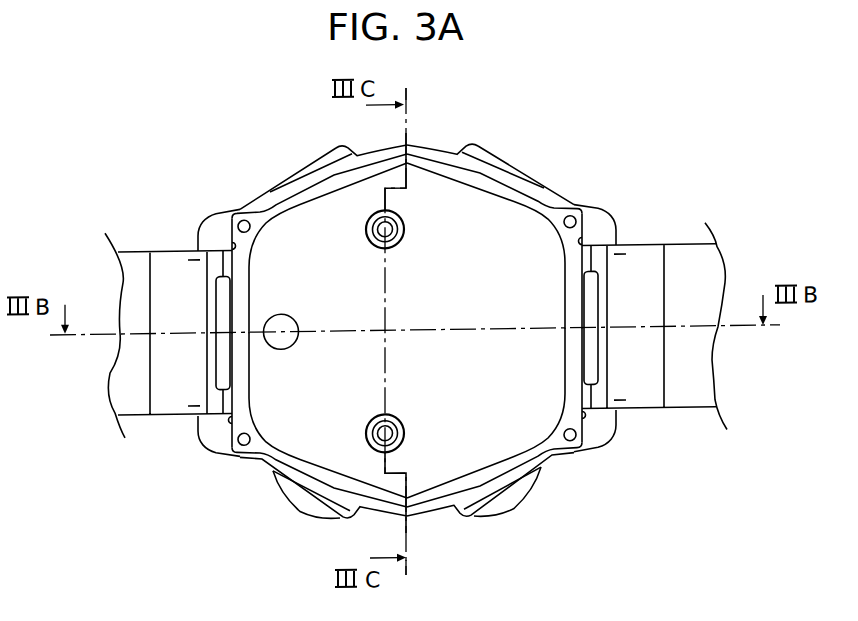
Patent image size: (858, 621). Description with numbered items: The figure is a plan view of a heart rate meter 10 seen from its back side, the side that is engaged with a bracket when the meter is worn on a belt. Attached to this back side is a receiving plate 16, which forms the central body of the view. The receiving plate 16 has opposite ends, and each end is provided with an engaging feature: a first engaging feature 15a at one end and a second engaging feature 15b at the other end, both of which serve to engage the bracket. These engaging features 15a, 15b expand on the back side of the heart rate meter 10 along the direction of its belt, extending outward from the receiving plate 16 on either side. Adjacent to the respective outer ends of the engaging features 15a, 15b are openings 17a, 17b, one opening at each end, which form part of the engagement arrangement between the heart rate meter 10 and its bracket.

The heart rate meter 10 is at (255, 114).
The engaging feature 15a is at (218, 400).
The engaging feature 15b is at (600, 399).
The receiving plate 16 is at (497, 408).
The opening 17a is at (220, 309).
The opening 17b is at (593, 306).